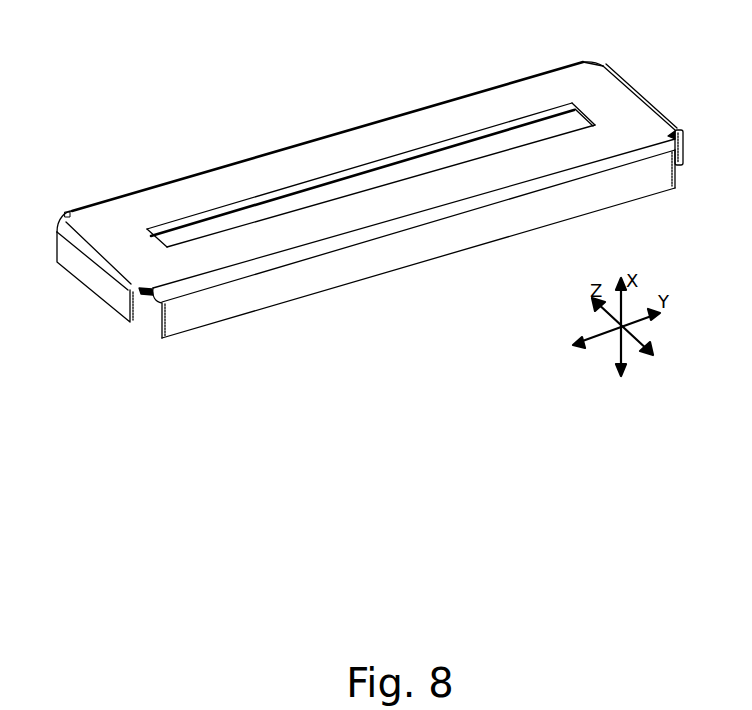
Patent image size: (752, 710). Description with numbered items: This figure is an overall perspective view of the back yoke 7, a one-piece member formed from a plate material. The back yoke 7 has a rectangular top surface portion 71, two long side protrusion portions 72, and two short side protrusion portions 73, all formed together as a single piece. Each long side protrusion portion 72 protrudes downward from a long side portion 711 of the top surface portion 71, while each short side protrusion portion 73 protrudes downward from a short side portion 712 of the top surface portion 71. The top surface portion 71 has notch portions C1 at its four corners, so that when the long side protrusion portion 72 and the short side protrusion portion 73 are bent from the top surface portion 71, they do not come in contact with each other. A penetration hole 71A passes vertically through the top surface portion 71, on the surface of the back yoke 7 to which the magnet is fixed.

The back yoke 7 is at (372, 188).
The top surface portion 71 is at (428, 128).
The long side portion 711 is at (343, 130).
The short side portion 712 is at (85, 235).
The penetration hole 71A is at (158, 228).
The long side protrusion portion 72 is at (212, 168).
The short side protrusion portion 73 is at (62, 268).
The notch portion C1 is at (65, 215).